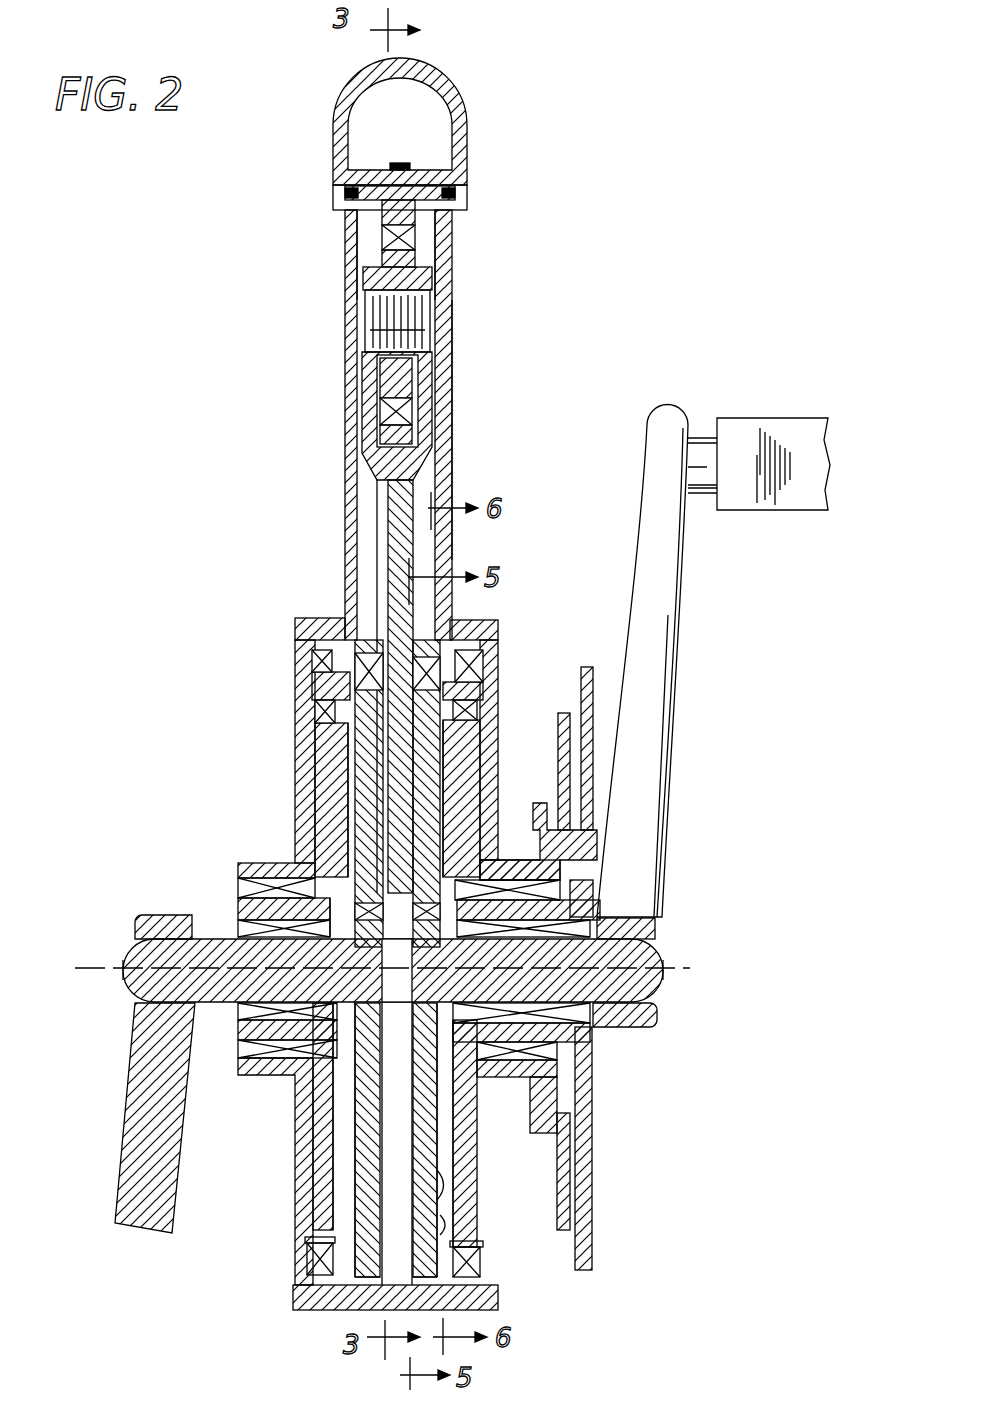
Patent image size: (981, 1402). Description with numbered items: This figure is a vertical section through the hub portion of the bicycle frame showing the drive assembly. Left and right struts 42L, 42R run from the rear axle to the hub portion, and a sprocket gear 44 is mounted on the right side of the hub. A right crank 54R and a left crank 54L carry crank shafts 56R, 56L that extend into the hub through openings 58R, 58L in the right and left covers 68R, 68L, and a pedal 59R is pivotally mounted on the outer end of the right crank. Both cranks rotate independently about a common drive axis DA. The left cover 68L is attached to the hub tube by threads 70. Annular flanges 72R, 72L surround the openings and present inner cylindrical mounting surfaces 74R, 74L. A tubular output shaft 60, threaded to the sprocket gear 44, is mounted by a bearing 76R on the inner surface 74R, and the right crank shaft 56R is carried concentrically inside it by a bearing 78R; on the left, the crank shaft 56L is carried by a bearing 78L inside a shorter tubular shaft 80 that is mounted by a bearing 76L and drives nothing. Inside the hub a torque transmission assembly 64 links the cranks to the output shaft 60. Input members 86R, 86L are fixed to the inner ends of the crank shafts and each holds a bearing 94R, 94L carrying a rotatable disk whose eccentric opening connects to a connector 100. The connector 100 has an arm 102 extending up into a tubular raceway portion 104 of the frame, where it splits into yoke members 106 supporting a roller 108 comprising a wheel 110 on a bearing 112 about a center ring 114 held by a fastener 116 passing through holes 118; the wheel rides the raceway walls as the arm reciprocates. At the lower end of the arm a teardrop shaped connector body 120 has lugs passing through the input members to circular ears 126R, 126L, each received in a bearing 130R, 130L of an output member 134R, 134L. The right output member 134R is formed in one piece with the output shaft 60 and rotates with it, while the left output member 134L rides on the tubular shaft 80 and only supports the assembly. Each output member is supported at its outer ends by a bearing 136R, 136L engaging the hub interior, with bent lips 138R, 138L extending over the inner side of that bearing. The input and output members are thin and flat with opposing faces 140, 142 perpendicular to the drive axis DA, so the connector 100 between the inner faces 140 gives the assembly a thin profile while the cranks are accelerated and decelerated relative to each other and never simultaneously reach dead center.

The left strut 42L is at (322, 1132).
The right strut 42R is at (465, 1133).
The sprocket gear 44 is at (596, 1170).
The left crank 54L is at (120, 1148).
The right crank 54R is at (670, 745).
The left crank shaft 56L is at (135, 985).
The right crank shaft 56R is at (650, 985).
The left opening 58L is at (285, 880).
The right opening 58R is at (515, 880).
The right pedal 59R is at (815, 428).
The output shaft 60 is at (600, 1020).
The torque transmission assembly 64 is at (395, 1270).
The left cover 68L is at (322, 782).
The right cover 68R is at (470, 710).
The threads 70 is at (300, 632).
The left annular flange 72L is at (275, 1065).
The right annular flange 72R is at (560, 1075).
The left inner surface 74L is at (270, 868).
The right inner surface 74R is at (580, 885).
The left bearing 76L is at (245, 888).
The right bearing 76R is at (560, 1050).
The left crank shaft bearing 78L is at (240, 920).
The right crank shaft bearing 78R is at (605, 918).
The tubular shaft 80 is at (240, 1025).
The left input member 86L is at (360, 1280).
The right input member 86R is at (470, 1278).
The left disk bearing 94L is at (312, 690).
The right disk bearing 94R is at (447, 612).
The connector 100 is at (372, 507).
The arm 102 is at (395, 545).
The tubular raceway portion 104 is at (452, 438).
The yoke members 106 is at (372, 390).
The roller 108 is at (372, 233).
The wheel 110 is at (410, 218).
The roller bearing 112 is at (412, 240).
The center ring 114 is at (378, 258).
The fastener 116 is at (383, 330).
The holes 118 is at (383, 300).
The connector body 120 is at (150, 960).
The left ear 126L is at (325, 750).
The right ear 126R is at (468, 762).
The left ear bearing 130L is at (320, 712).
The right ear bearing 130R is at (475, 690).
The left output member 134L is at (348, 1165).
The right output member 134R is at (455, 1150).
The left outer bearing 136L is at (305, 1256).
The right outer bearing 136R is at (488, 662).
The left lips 138L is at (318, 660).
The right lips 138R is at (490, 645).
The input member faces 140 is at (440, 1185).
The output member faces 142 is at (445, 1222).
The drive axis DA is at (680, 962).